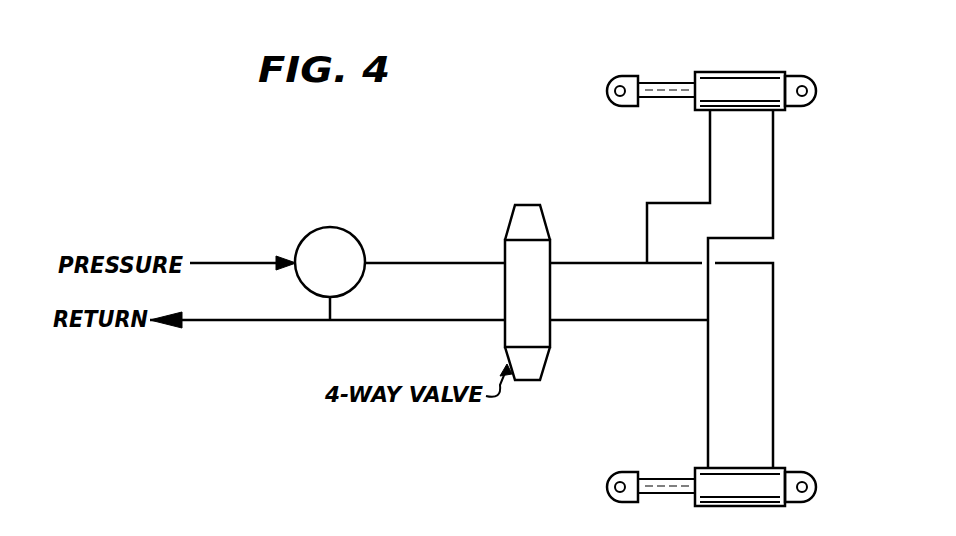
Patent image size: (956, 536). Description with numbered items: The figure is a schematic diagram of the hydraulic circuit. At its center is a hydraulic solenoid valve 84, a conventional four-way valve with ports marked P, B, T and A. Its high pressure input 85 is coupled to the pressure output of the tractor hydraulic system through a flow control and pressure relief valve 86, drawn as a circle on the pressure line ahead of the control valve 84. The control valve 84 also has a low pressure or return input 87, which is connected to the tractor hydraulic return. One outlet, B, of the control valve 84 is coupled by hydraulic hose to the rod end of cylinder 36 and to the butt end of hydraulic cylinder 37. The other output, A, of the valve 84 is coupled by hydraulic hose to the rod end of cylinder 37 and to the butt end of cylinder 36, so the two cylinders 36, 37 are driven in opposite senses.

The hydraulic cylinder 36 is at (756, 37).
The hydraulic cylinder 37 is at (755, 442).
The hydraulic solenoid valve 84 is at (548, 165).
The high pressure input 85 is at (462, 232).
The flow control and pressure relief valve 86 is at (297, 246).
The return input 87 is at (470, 321).